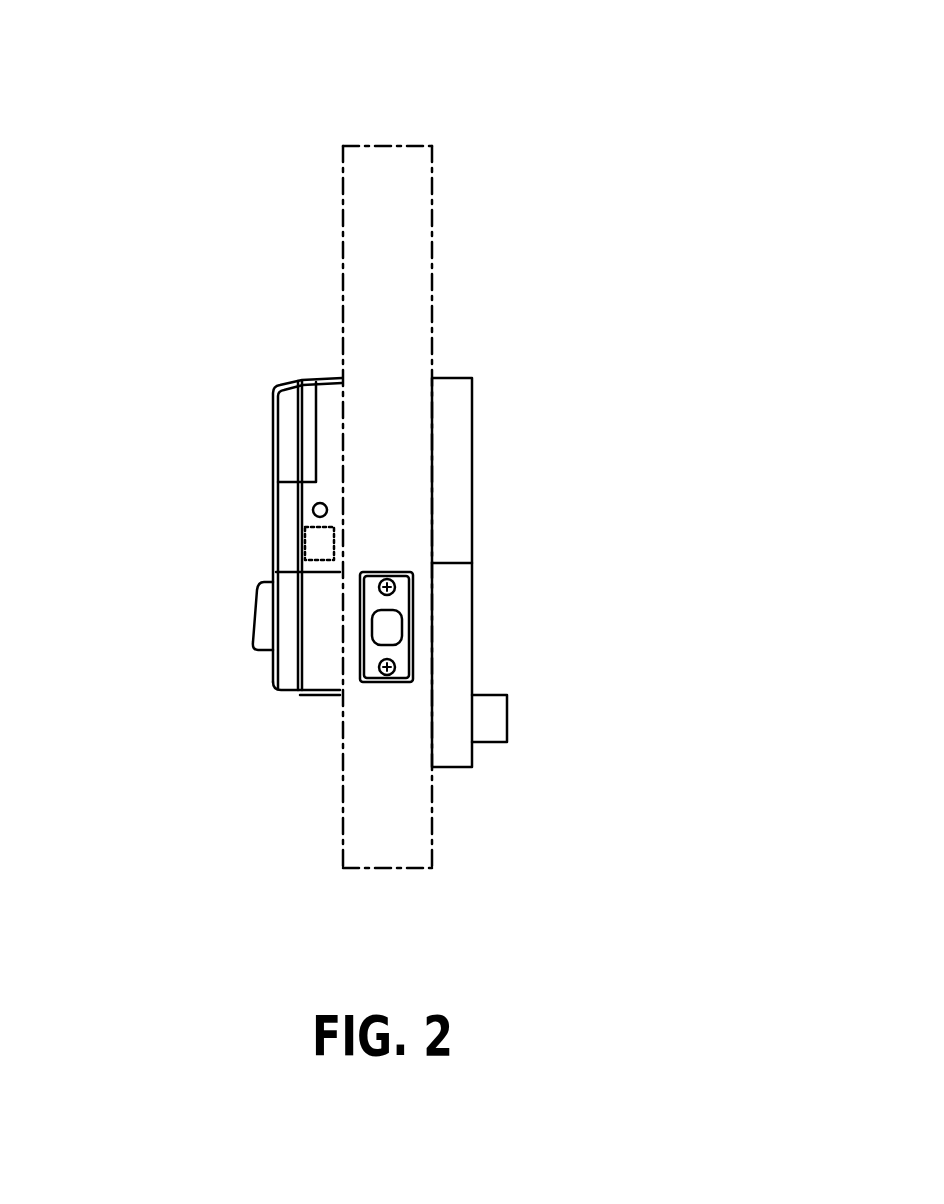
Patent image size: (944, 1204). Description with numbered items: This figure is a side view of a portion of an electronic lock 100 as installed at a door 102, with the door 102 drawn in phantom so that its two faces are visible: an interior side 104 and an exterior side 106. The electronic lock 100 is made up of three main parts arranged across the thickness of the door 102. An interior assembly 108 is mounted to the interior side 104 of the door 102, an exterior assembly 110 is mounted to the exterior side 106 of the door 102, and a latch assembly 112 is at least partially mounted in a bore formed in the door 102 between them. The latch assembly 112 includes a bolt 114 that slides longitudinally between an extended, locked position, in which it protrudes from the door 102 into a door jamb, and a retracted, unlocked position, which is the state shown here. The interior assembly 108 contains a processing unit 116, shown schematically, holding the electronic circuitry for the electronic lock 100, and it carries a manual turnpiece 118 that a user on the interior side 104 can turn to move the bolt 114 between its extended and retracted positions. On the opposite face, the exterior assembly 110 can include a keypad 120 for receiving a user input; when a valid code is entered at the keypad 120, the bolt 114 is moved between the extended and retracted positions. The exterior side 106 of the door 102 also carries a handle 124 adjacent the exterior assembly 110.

The electronic lock 100 is at (177, 418).
The door 102 is at (377, 173).
The interior side 104 is at (340, 188).
The exterior side 106 is at (432, 210).
The interior assembly 108 is at (302, 366).
The exterior assembly 110 is at (467, 372).
The latch assembly 112 is at (383, 683).
The bolt 114 is at (383, 630).
The processing unit 116 is at (310, 538).
The manual turnpiece 118 is at (252, 628).
The keypad 120 is at (473, 473).
The handle 124 is at (494, 718).